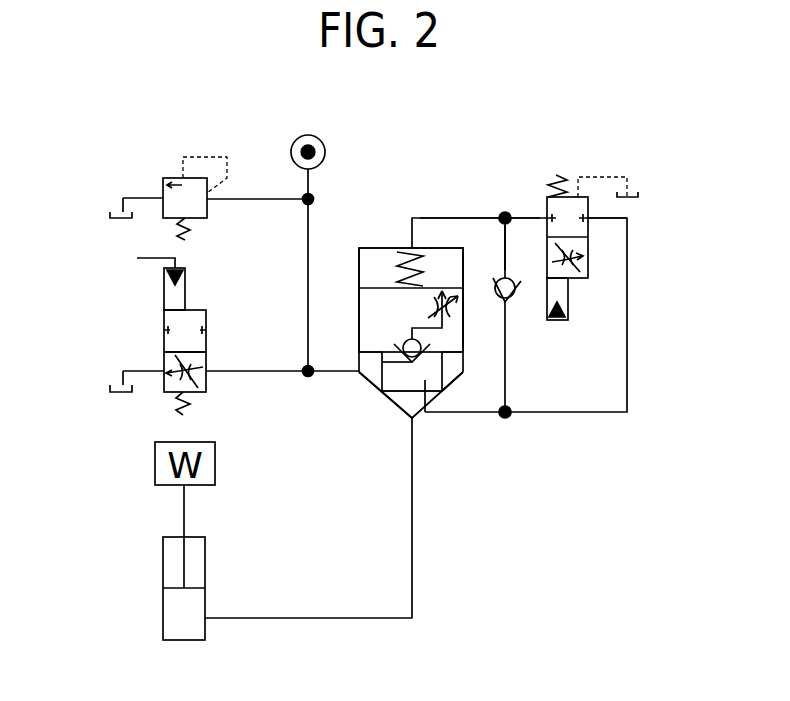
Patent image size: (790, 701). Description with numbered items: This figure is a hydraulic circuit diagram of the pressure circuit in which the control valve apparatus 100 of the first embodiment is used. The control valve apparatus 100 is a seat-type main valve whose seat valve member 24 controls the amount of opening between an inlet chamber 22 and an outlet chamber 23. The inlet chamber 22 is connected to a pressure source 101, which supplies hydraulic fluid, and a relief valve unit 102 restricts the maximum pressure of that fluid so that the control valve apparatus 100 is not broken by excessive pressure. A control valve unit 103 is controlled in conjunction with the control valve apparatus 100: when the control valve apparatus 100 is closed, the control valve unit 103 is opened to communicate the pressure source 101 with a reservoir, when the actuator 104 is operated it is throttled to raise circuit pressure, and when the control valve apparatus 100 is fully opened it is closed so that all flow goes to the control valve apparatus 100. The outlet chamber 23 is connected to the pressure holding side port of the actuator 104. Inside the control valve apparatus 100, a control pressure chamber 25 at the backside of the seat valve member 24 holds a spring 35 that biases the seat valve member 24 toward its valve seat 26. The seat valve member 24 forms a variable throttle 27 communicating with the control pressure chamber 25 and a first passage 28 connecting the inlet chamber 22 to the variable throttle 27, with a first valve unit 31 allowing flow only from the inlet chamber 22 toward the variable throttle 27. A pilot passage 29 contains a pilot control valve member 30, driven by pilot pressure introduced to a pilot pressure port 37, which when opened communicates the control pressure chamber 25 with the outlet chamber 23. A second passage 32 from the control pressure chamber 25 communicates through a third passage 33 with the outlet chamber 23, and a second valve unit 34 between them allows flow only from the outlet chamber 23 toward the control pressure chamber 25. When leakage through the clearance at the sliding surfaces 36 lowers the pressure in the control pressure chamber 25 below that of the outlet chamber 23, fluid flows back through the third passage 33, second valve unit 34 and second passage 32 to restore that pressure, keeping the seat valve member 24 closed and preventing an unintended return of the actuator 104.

The control valve apparatus 100 is at (491, 449).
The pressure source 101 is at (293, 144).
The relief valve unit 102 is at (163, 181).
The control valve unit 103 is at (163, 338).
The actuator 104 is at (160, 580).
The inlet chamber 22 is at (362, 372).
The outlet chamber 23 is at (398, 432).
The seat valve member 24 is at (425, 413).
The control pressure chamber 25 is at (375, 265).
The valve seat 26 is at (443, 400).
The variable throttle 27 is at (430, 305).
The first passage 28 is at (378, 390).
The pilot passage 29 is at (518, 218).
The pilot control valve member 30 is at (588, 238).
The first valve unit 31 is at (394, 345).
The second passage 32 is at (497, 260).
The third passage 33 is at (508, 350).
The second valve unit 34 is at (485, 262).
The spring 35 is at (403, 258).
The sliding surfaces 36 is at (425, 330).
The pilot pressure port 37 is at (568, 303).